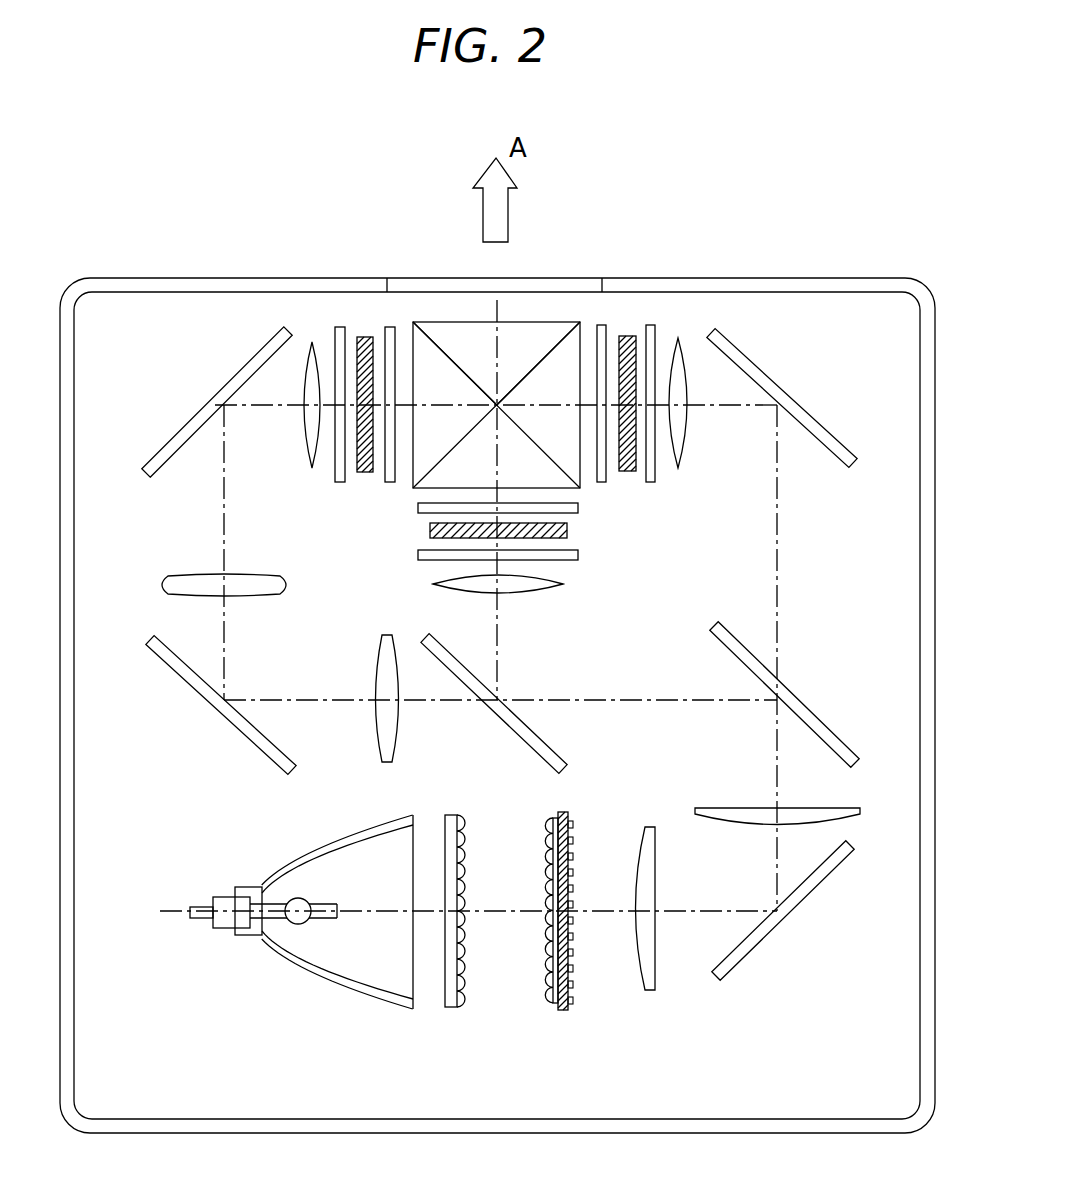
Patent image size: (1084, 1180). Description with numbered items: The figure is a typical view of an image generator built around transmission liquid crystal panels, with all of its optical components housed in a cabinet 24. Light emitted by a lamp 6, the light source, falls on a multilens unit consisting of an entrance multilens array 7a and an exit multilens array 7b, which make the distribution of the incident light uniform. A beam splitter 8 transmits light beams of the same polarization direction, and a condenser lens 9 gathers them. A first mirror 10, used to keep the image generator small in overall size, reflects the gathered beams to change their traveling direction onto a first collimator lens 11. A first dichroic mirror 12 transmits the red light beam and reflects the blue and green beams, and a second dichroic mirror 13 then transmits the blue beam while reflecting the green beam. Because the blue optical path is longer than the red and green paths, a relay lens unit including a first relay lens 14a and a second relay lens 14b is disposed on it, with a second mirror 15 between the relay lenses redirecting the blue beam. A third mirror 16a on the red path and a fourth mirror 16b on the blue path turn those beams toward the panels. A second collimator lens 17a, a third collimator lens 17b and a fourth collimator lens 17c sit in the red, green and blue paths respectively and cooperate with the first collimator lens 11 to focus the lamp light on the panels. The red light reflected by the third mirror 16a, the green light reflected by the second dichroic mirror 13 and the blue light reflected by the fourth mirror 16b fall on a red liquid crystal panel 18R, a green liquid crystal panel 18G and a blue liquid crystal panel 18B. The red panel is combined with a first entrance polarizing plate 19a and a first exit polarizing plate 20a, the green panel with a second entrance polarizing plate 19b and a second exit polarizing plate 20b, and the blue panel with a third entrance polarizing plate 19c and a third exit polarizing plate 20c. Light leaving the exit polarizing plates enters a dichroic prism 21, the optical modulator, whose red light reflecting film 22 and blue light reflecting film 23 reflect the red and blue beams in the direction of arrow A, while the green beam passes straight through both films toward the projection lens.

The lamp 6 is at (352, 1006).
The entrance multilens array 7a is at (457, 1008).
The exit multilens array 7b is at (553, 1004).
The beam splitter 8 is at (564, 1011).
The condenser lens 9 is at (650, 991).
The first mirror 10 is at (791, 918).
The first collimator lens 11 is at (739, 808).
The first dichroic mirror 12 is at (812, 706).
The second dichroic mirror 13 is at (540, 737).
The first relay lens 14a is at (378, 735).
The second relay lens 14b is at (203, 575).
The second mirror 15 is at (230, 728).
The third mirror 16a is at (802, 405).
The fourth mirror 16b is at (203, 403).
The second collimator lens 17a is at (684, 342).
The third collimator lens 17b is at (532, 592).
The fourth collimator lens 17c is at (300, 456).
The red liquid crystal panel 18R is at (627, 336).
The green liquid crystal panel 18G is at (567, 533).
The blue liquid crystal panel 18B is at (361, 474).
The first entrance polarizing plate 19a is at (651, 325).
The second entrance polarizing plate 19b is at (560, 556).
The third entrance polarizing plate 19c is at (340, 483).
The first exit polarizing plate 20a is at (600, 325).
The second exit polarizing plate 20b is at (578, 508).
The third exit polarizing plate 20c is at (391, 484).
The dichroic prism 21 is at (435, 322).
The red light reflecting film 22 is at (538, 437).
The blue light reflecting film 23 is at (462, 433).
The cabinet 24 is at (120, 278).